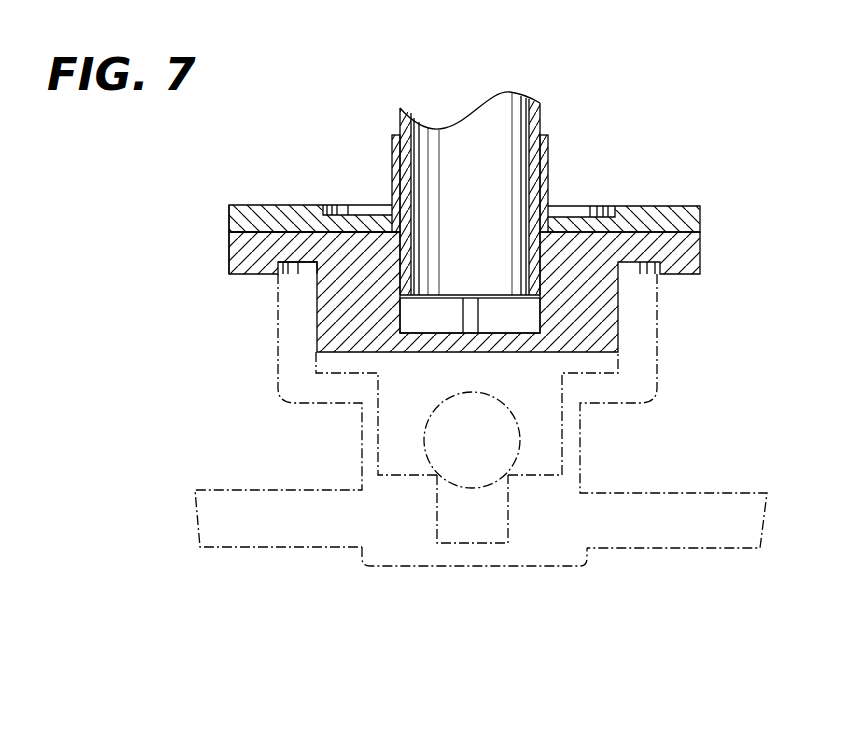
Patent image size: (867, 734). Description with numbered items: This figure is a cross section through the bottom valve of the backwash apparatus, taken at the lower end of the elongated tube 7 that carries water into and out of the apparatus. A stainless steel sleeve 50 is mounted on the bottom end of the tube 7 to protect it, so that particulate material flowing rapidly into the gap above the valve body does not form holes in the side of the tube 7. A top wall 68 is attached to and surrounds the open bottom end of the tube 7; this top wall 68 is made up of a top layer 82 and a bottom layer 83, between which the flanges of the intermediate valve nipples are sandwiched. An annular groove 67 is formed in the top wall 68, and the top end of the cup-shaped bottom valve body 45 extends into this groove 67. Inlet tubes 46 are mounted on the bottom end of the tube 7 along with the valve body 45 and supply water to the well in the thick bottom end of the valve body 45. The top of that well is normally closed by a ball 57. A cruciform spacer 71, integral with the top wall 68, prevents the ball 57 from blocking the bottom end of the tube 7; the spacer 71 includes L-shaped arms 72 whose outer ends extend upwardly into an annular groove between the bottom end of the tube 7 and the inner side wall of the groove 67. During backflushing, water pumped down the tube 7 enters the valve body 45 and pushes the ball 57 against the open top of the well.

The tube 7 is at (469, 120).
The sleeve 50 is at (548, 183).
The top layer 82 is at (252, 204).
The top wall 68 is at (228, 232).
The bottom layer 83 is at (228, 262).
The annular groove 67 is at (283, 272).
The cruciform spacer 71 is at (378, 373).
The L-shaped arms 72 is at (447, 352).
The ball 57 is at (482, 488).
The bottom valve body 45 is at (332, 548).
The inlet tubes 46 is at (250, 547).